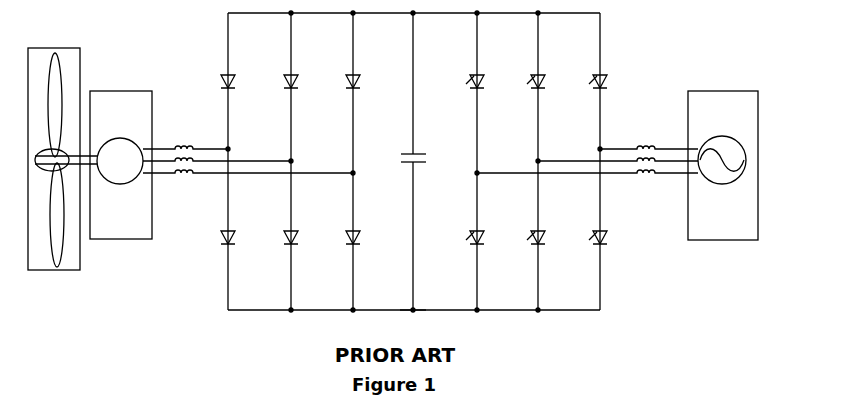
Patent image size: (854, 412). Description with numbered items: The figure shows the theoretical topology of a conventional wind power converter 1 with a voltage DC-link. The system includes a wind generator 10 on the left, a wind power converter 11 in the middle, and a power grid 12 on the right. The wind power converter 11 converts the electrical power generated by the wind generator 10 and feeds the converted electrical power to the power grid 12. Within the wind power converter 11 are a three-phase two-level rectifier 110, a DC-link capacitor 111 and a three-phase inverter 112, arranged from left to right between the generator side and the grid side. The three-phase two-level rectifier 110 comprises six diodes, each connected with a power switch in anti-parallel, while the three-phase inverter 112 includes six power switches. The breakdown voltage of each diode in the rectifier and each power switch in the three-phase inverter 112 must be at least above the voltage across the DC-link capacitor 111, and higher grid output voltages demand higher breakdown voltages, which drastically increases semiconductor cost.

The wind power converter 1 is at (393, 170).
The wind generator 10 is at (121, 165).
The wind power converter 11 is at (413, 319).
The power grid 12 is at (723, 165).
The three-phase two-level rectifier 110 is at (284, 161).
The DC-link capacitor 111 is at (420, 161).
The three-phase inverter 112 is at (540, 161).